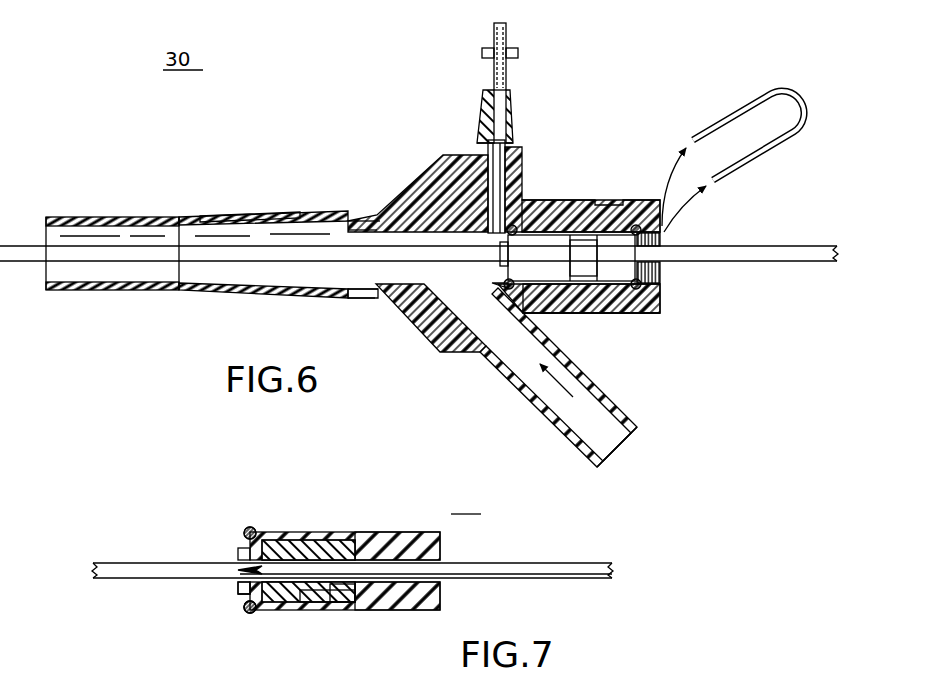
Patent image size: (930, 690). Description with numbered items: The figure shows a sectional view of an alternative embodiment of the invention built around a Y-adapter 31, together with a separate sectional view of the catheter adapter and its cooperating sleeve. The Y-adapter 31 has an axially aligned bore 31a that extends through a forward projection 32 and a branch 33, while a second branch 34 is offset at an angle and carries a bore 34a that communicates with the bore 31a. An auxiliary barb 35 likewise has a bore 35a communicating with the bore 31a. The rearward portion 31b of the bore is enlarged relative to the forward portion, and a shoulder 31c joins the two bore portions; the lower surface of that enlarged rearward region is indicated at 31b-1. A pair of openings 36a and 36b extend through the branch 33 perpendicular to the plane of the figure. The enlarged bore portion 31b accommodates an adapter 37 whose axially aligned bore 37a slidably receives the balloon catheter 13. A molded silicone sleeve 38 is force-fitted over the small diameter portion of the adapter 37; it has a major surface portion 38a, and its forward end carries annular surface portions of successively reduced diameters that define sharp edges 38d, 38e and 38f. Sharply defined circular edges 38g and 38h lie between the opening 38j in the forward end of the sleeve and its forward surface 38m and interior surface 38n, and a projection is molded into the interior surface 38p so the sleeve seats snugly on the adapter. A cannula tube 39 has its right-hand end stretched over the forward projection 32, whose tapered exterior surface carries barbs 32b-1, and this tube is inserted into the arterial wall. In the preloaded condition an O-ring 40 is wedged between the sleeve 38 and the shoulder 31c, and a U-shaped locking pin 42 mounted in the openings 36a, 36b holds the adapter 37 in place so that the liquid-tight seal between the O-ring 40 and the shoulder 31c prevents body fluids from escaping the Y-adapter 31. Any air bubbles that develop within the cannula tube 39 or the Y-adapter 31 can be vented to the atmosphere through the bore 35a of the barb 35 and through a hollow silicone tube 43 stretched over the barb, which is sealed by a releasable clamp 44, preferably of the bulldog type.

In FIG. 6, the balloon catheter 13 is at (772, 246).
In FIG. 7, the balloon catheter 13 is at (536, 563).
In FIG. 6, the Y-adapter 31 is at (403, 155).
In FIG. 6, the bore 31a is at (372, 296).
In FIG. 6, the rearward portion of bore 31b is at (664, 290).
In FIG. 6, the rear body bottom surface 31b-1 is at (664, 309).
In FIG. 6, the shoulder 31c is at (500, 283).
In FIG. 6, the forward projection 32 is at (318, 211).
In FIG. 6, the barbs 32b-1 is at (258, 212).
In FIG. 6, the branch 33 is at (545, 200).
In FIG. 6, the branch 34 is at (540, 412).
In FIG. 6, the bore 34a is at (600, 382).
In FIG. 6, the auxiliary barb 35 is at (512, 147).
In FIG. 6, the bore 35a is at (484, 115).
In FIG. 6, the opening 36a is at (662, 232).
In FIG. 6, the opening 36b is at (665, 270).
In FIG. 7, the adapter 37 is at (359, 550).
In FIG. 7, the bore 37a is at (440, 578).
In FIG. 7, the sleeve 38 is at (293, 495).
In FIG. 7, the major surface portion 38a is at (345, 532).
In FIG. 7, the sharp edge 38d is at (251, 527).
In FIG. 7, the sharp edge 38e is at (244, 532).
In FIG. 7, the sharp edge 38f is at (246, 596).
In FIG. 7, the circular-shaped edge 38g is at (314, 532).
In FIG. 7, the circular-shaped edge 38h is at (275, 538).
In FIG. 7, the opening 38j is at (238, 572).
In FIG. 7, the forward surface 38m is at (240, 588).
In FIG. 7, the interior surface 38n is at (285, 604).
In FIG. 7, the interior surface 38p is at (345, 604).
In FIG. 6, the cannula tube 39 is at (112, 216).
In FIG. 6, the O-ring 40 is at (505, 232).
In FIG. 7, the O-ring 40 is at (262, 613).
In FIG. 6, the U-shaped locking pin 42 is at (732, 112).
In FIG. 6, the hollow silicone tube 43 is at (507, 86).
In FIG. 6, the releasable clamp 44 is at (518, 53).